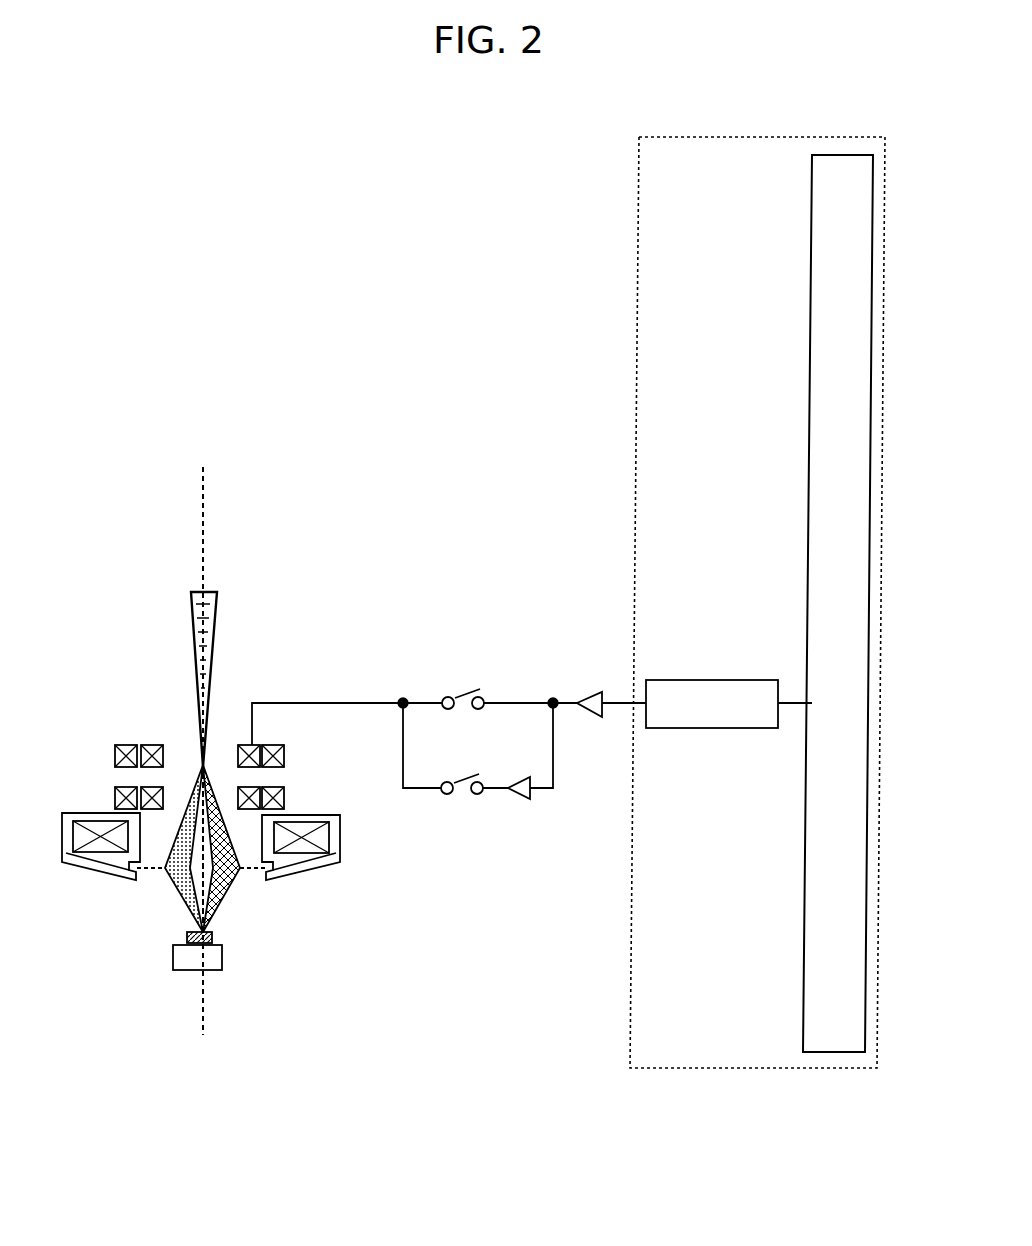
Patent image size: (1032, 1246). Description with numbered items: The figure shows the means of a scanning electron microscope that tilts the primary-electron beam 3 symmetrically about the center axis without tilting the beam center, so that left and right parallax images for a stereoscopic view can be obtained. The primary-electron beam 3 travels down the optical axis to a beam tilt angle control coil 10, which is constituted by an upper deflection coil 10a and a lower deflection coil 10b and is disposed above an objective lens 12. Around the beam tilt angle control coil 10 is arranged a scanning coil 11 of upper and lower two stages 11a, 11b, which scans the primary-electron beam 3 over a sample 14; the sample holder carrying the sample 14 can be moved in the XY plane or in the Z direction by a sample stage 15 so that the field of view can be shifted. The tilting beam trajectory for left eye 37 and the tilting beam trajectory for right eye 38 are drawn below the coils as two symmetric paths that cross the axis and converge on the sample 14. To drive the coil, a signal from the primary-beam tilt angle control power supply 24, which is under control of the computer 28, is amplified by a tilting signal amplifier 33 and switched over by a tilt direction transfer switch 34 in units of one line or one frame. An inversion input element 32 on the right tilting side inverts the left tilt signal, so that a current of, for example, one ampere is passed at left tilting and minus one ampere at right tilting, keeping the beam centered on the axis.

The primary-electron beam 3 is at (218, 620).
The beam tilt angle control coil 10 is at (115, 747).
The upper deflection coil 10a is at (153, 744).
The lower deflection coil 10b is at (155, 786).
The scanning coil 11 is at (303, 758).
The upper scanning coil stage 11a is at (285, 756).
The lower scanning coil stage 11b is at (285, 797).
The objective lens 12 is at (95, 822).
The sample 14 is at (215, 937).
The sample stage 15 is at (173, 958).
The primary-beam tilt angle control power supply 24 is at (708, 678).
The computer 28 is at (828, 153).
The inversion input element 32 is at (520, 780).
The tilting signal amplifier 33 is at (586, 700).
The tilt direction transfer switch 34 is at (461, 693).
The tilting beam trajectory for left eye 37 is at (170, 885).
The tilting beam trajectory for right eye 38 is at (225, 885).